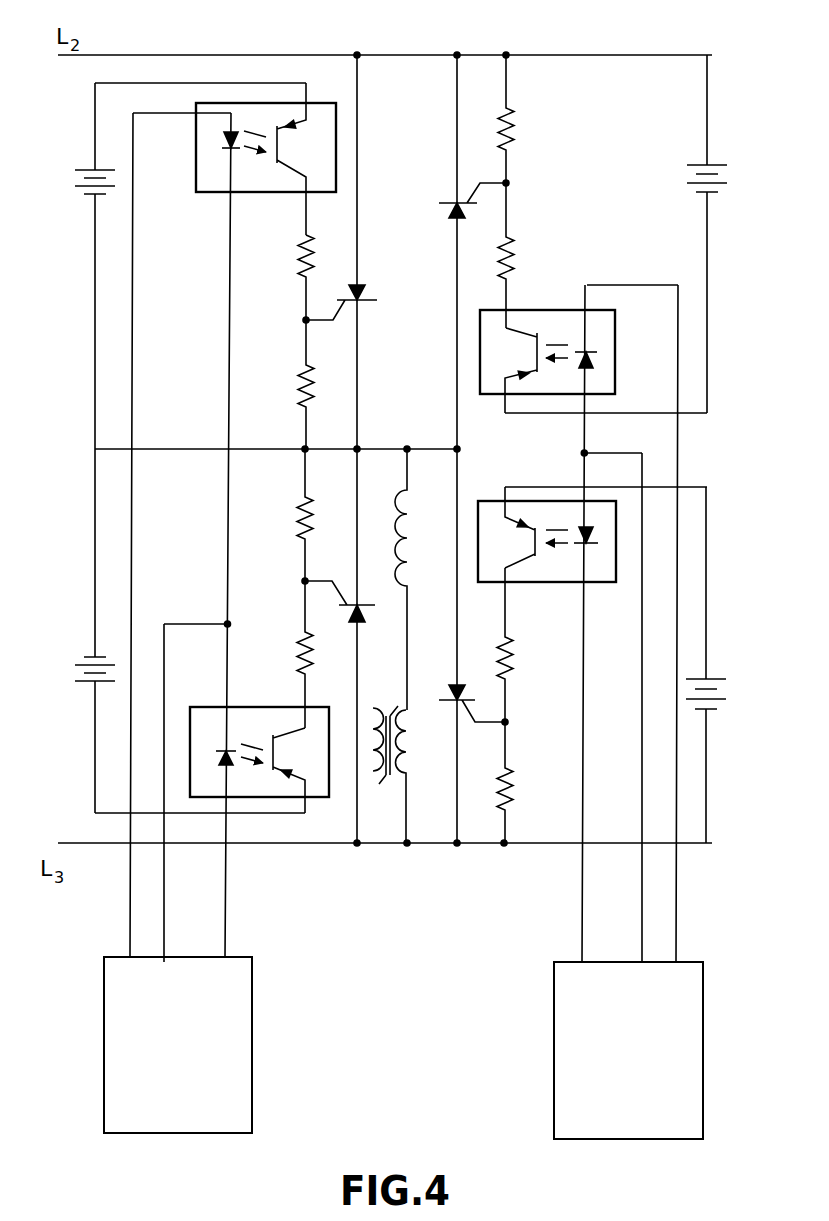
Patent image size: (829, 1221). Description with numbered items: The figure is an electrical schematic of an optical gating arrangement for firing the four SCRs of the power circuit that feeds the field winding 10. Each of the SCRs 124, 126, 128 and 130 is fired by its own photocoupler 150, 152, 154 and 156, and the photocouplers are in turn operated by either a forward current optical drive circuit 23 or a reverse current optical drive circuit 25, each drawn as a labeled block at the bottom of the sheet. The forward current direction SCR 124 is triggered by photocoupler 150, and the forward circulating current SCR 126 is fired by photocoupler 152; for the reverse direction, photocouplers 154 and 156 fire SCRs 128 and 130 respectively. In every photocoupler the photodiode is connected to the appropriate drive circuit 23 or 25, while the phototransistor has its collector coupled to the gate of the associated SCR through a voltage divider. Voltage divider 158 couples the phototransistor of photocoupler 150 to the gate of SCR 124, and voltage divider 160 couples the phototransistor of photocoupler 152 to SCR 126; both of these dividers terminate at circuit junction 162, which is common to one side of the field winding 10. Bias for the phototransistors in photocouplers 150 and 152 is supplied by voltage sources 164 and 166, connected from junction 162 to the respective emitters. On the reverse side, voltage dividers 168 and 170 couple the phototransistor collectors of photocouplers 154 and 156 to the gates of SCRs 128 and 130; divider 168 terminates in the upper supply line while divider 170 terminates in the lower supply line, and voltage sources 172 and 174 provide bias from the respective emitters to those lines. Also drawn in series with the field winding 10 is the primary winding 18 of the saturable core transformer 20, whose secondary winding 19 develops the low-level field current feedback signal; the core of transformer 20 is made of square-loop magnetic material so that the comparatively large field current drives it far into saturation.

The field winding 10 is at (415, 525).
The primary winding 18 is at (410, 740).
The secondary winding 19 is at (373, 708).
The saturable core transformer 20 is at (381, 788).
The forward current optical drive circuit 23 is at (253, 954).
The reverse current optical drive circuit 25 is at (554, 958).
The forward current direction SCR 124 is at (380, 292).
The forward circulating current SCR 126 is at (362, 613).
The reverse current direction SCR 128 is at (455, 195).
The reverse current direction SCR 130 is at (447, 673).
The photocoupler 150 is at (224, 150).
The photocoupler 152 is at (217, 747).
The photocoupler 154 is at (523, 355).
The photocoupler 156 is at (525, 545).
The voltage divider 158 is at (290, 316).
The voltage divider 160 is at (294, 570).
The circuit junction 162 is at (292, 442).
The voltage source 164 is at (83, 170).
The voltage source 166 is at (81, 641).
The voltage divider 168 is at (530, 188).
The voltage divider 170 is at (514, 728).
The voltage source 172 is at (726, 162).
The voltage source 174 is at (724, 669).